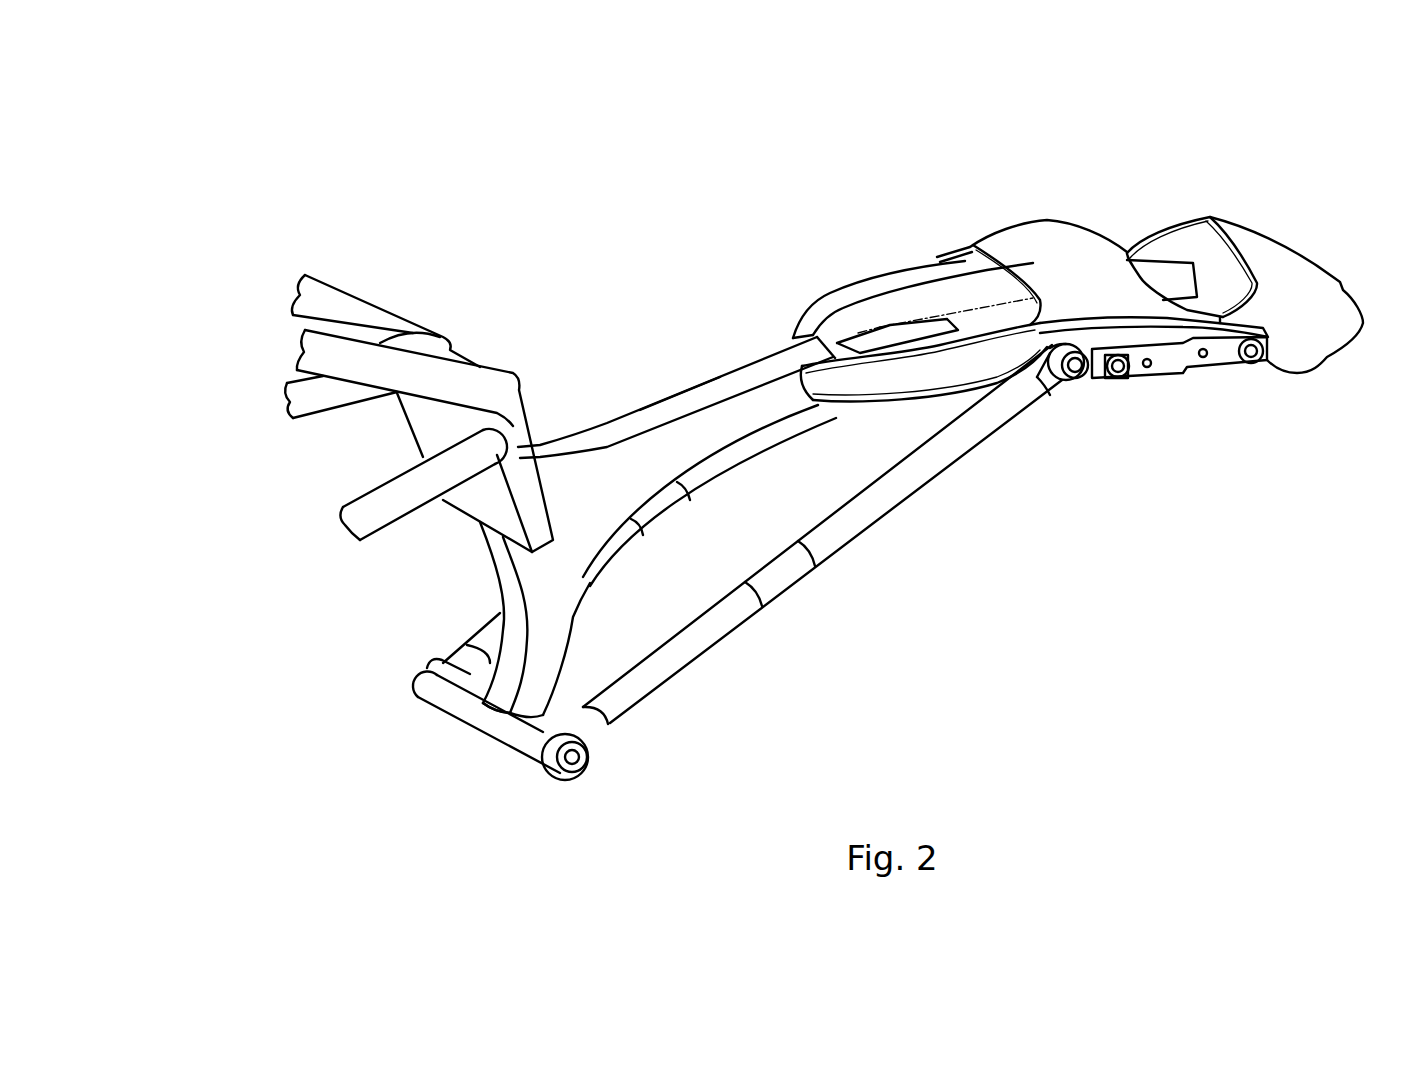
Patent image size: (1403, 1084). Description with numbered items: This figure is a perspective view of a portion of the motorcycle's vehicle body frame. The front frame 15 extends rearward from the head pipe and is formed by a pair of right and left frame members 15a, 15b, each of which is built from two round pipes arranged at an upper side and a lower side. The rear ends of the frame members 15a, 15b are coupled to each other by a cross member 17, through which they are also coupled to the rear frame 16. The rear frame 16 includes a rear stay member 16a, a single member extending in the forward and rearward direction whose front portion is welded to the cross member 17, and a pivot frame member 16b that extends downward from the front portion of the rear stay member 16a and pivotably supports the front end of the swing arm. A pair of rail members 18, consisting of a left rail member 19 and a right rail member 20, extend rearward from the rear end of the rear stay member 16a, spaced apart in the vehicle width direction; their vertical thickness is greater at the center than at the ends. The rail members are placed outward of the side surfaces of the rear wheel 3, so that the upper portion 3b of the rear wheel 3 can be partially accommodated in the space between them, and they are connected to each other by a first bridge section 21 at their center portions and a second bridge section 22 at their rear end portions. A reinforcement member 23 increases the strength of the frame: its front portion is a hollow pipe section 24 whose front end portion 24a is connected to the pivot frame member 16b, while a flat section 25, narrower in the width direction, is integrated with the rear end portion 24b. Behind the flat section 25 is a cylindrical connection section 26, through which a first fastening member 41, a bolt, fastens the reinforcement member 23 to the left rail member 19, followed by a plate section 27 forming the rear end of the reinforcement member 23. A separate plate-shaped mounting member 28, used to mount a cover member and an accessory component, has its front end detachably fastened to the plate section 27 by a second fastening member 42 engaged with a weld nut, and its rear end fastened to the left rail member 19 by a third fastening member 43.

The rear wheel 3 is at (925, 310).
The upper portion of the rear wheel 3b is at (850, 352).
The front frame 15 is at (368, 295).
The right frame member 15a is at (312, 303).
The left frame member 15b is at (357, 365).
The rear frame 16 is at (560, 440).
The rear stay member 16a is at (683, 403).
The pivot frame member 16b is at (510, 627).
The cross member 17 is at (460, 352).
The rail members 18 is at (803, 313).
The left rail member 19 is at (868, 403).
The right rail member 20 is at (823, 320).
The first bridge section 21 is at (1020, 223).
The second bridge section 22 is at (1278, 238).
The reinforcement member 23 is at (673, 518).
The pipe section 24 is at (787, 577).
The front end portion of the pipe section 24a is at (607, 722).
The rear end portion of the pipe section 24b is at (1003, 420).
The flat section 25 is at (1053, 387).
The connection section 26 is at (1057, 340).
The plate section 27 is at (1102, 340).
The mounting member 28 is at (1222, 353).
The first fastening member 41 is at (1088, 380).
The second fastening member 42 is at (1133, 380).
The third fastening member 43 is at (1260, 360).